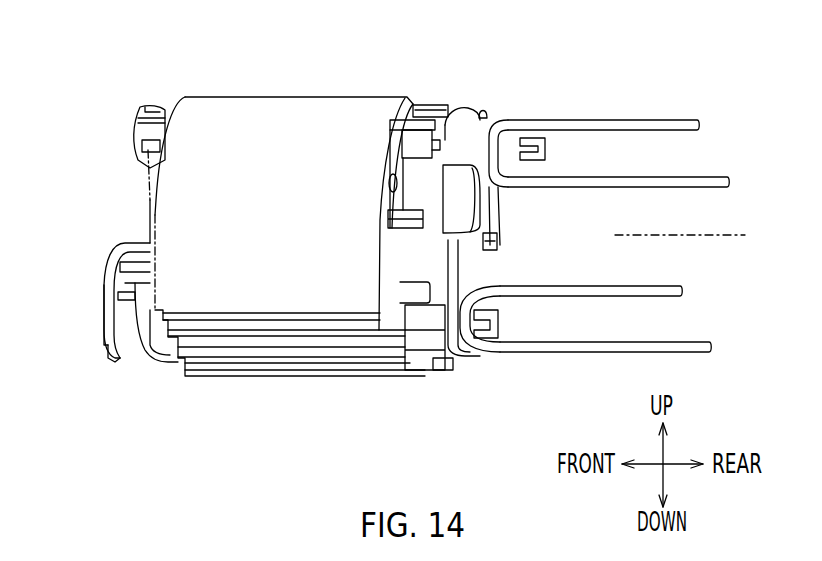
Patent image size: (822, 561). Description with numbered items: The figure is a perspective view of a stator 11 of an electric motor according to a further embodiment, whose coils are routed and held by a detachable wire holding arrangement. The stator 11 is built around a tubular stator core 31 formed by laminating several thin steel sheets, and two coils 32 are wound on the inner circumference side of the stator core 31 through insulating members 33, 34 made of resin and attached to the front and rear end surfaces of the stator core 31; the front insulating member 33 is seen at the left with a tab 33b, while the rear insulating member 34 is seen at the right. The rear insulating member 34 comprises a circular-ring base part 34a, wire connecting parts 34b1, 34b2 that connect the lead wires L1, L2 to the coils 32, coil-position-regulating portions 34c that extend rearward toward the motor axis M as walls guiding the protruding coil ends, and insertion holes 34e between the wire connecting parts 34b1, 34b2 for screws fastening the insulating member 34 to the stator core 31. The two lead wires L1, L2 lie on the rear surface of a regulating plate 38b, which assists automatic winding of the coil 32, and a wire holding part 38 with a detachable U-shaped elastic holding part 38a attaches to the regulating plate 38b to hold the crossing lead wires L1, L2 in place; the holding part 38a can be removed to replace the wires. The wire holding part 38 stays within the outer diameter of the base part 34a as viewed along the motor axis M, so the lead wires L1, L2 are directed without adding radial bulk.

The stator 11 is at (387, 70).
The stator core 31 is at (232, 128).
The coil 32 is at (140, 128).
The insulating member 33 is at (148, 199).
The insulator tab 33b is at (118, 348).
The insulating member 34 is at (415, 145).
The base part 34a is at (387, 142).
The wire connecting part 34b1 is at (492, 250).
The wire connecting part 34b2 is at (417, 104).
The coil-position-regulating portion 34c is at (450, 200).
The insertion hole 34e is at (388, 185).
The wire holding part 38 is at (512, 99).
The holding part 38a is at (548, 153).
The regulating plate 38b is at (485, 108).
The lead wire L1 is at (640, 120).
The lead wire L2 is at (682, 177).
The motor axis M is at (688, 232).